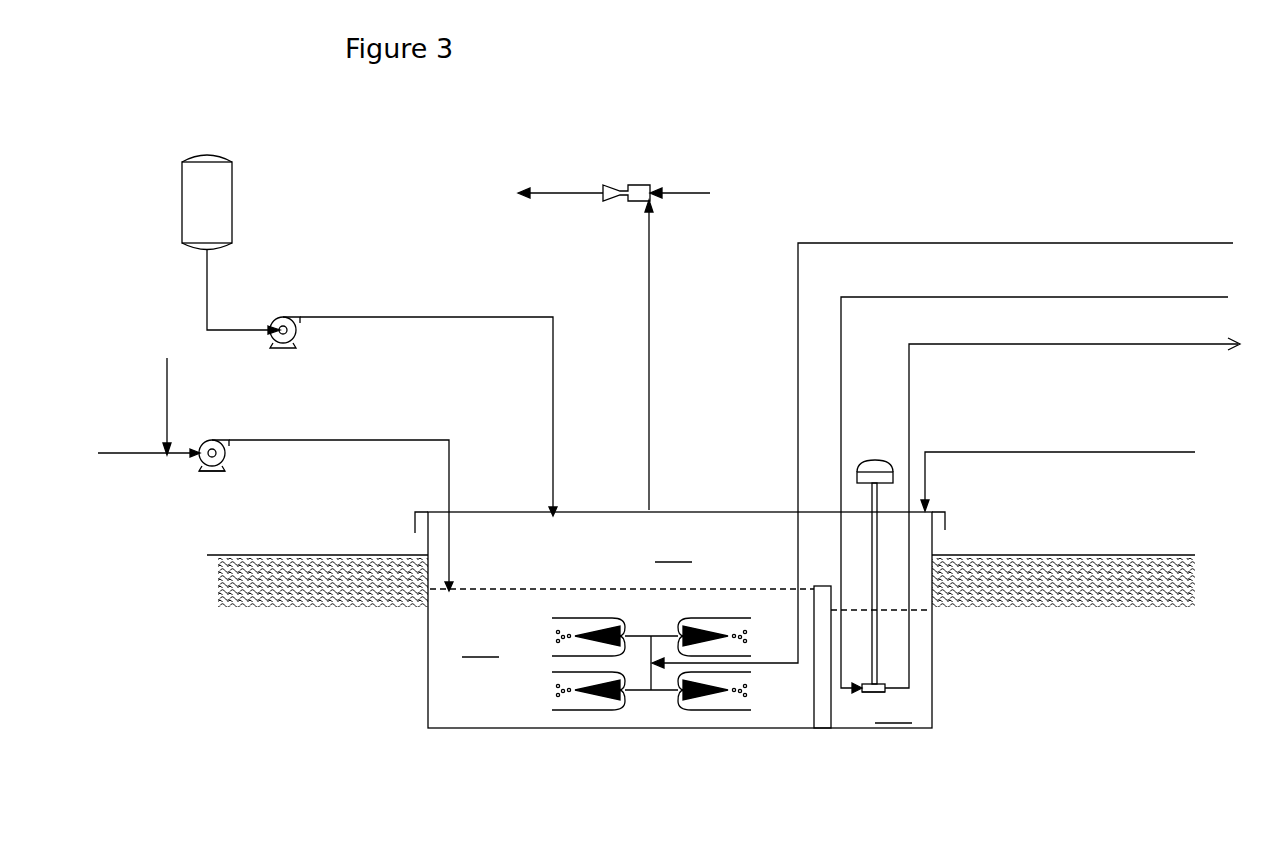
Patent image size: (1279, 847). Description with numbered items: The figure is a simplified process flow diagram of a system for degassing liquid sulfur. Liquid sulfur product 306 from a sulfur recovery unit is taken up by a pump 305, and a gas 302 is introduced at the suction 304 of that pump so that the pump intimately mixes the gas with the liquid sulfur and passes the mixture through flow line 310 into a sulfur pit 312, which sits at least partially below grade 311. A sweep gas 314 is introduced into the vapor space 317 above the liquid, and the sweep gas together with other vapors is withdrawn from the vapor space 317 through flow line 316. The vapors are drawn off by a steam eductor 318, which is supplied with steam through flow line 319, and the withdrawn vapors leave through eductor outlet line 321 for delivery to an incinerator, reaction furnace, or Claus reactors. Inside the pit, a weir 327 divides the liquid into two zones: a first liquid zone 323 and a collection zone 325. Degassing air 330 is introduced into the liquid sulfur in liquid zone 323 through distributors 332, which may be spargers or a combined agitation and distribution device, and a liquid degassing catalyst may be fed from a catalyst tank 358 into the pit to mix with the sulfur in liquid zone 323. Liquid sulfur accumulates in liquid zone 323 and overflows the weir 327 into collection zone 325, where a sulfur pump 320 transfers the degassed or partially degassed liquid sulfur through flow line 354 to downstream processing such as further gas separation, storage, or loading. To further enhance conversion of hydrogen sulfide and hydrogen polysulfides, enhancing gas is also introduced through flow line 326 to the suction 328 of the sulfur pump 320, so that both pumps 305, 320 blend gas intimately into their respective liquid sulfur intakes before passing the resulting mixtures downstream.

The gas 302 is at (166, 370).
The suction 304 is at (200, 462).
The pump 305 is at (213, 438).
The liquid sulfur product 306 is at (125, 462).
The flow line 310 is at (322, 444).
The grade 311 is at (284, 551).
The sulfur pit 312 is at (428, 703).
The sweep gas 314 is at (1065, 455).
The flow line 316 is at (652, 293).
The vapor space 317 is at (674, 552).
The steam eductor 318 is at (626, 184).
The flow line 319 is at (685, 200).
The sulfur pump 320 is at (872, 460).
The eductor outlet line 321 is at (546, 200).
The liquid zone 323 is at (481, 647).
The collection zone 325 is at (894, 713).
The flow line 326 is at (1152, 296).
The weir 327 is at (818, 730).
The suction 328 is at (866, 700).
The degassing air 330 is at (988, 245).
The distributors 332 is at (597, 713).
The flow line 354 is at (1008, 348).
The catalyst tank 358 is at (194, 160).